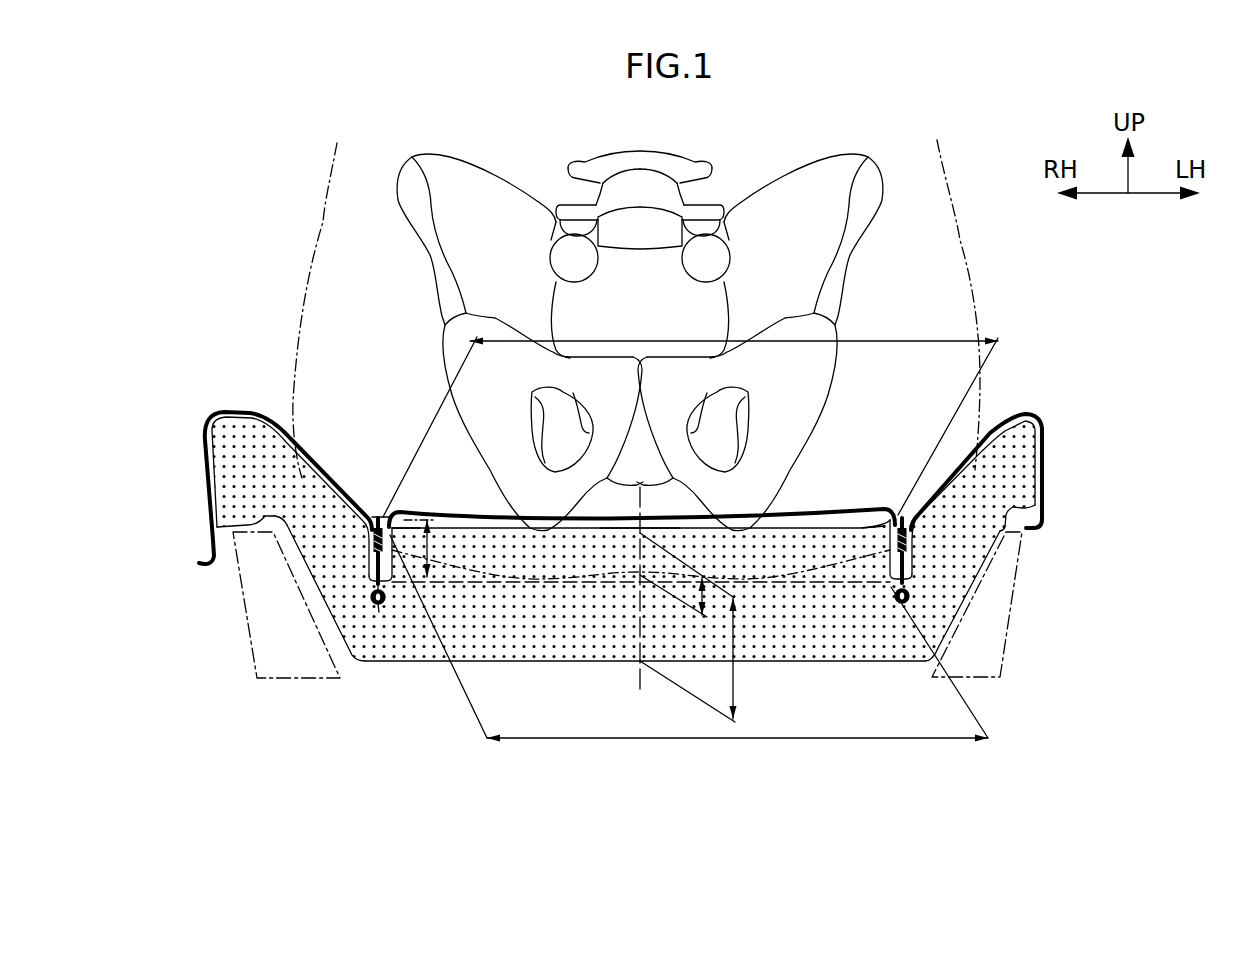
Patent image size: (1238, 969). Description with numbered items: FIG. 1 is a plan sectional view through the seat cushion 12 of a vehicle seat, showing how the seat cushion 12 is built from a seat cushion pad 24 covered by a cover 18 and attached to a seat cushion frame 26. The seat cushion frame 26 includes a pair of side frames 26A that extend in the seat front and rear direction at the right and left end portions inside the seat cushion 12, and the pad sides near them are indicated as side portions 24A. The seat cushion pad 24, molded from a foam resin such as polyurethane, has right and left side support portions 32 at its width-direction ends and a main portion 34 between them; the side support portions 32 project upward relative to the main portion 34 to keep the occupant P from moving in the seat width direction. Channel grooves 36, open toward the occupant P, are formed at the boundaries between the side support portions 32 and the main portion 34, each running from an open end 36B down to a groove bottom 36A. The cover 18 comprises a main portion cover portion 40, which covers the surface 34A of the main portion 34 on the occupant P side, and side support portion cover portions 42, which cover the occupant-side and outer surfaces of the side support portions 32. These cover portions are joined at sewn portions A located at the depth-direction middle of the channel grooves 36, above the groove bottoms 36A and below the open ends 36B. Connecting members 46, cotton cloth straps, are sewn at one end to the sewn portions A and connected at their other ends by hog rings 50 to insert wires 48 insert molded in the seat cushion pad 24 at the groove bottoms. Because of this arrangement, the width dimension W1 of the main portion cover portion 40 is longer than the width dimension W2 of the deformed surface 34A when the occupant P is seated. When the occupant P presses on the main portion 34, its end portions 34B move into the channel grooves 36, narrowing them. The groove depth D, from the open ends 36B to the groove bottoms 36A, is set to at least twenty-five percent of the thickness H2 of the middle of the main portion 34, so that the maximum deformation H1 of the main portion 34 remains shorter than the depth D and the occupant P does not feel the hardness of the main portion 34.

The seat cushion 12 is at (1096, 452).
The cover 18 is at (638, 433).
The seat cushion pad 24 is at (838, 675).
The side portion of seat cushion pad 24A is at (348, 664).
The seat cushion frame 26 is at (623, 619).
The side frames 26A is at (247, 657).
The side support portions 32 is at (202, 424).
The main portion 34 is at (795, 515).
The surface on the seated occupant side of the main portion 34A is at (713, 467).
The seat width direction end portions of the main portion 34B is at (391, 516).
The channel grooves 36 is at (371, 560).
The groove bottoms 36A is at (392, 582).
The open ends 36B is at (383, 517).
The main portion cover portion 40 is at (869, 508).
The side support portion cover portions 42 is at (217, 412).
The connecting members 46 is at (370, 595).
The insert wires 48 is at (379, 605).
The hog rings 50 is at (372, 586).
The occupant P is at (320, 222).
The sewn portions A is at (370, 547).
The depth of the channel grooves D is at (450, 557).
The maximum amount of deformation H1 is at (715, 619).
The thickness of the seat width direction middle portion of the main portion H2 is at (742, 660).
The seat width direction dimension of the main portion cover portion W1 is at (893, 341).
The seat width direction dimension of the surface of the main portion in a deformed W2 is at (693, 738).